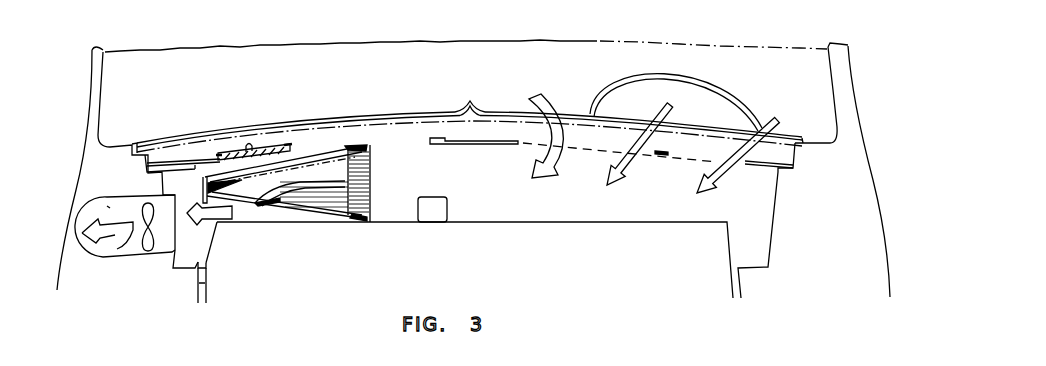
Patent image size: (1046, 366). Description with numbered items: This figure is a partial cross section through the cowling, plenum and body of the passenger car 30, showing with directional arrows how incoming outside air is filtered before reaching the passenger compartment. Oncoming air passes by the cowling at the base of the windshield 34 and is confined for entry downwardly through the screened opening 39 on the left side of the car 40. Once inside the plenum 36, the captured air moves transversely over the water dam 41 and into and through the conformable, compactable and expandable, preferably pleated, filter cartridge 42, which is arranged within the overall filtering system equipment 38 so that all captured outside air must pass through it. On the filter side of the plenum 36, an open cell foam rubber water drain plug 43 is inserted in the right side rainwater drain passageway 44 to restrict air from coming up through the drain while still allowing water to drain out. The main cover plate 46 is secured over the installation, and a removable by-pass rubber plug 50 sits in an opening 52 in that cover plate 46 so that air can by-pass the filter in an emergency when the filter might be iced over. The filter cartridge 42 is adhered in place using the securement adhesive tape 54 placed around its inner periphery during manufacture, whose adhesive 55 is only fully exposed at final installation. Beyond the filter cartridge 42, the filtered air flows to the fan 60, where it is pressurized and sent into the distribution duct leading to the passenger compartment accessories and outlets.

The passenger car 30 is at (852, 70).
The windshield 34 is at (650, 42).
The plenum 36 is at (477, 139).
The filtering system equipment 38 is at (318, 147).
The screened opening 39 is at (593, 150).
The left side of the car 40 is at (857, 100).
The water dam 41 is at (448, 201).
The filter cartridge 42 is at (267, 215).
The water drain plug 43 is at (207, 268).
The rainwater drain passageway 44 is at (208, 296).
The main cover plate 46 is at (203, 160).
The by-pass rubber plug 50 is at (252, 146).
The opening 52 is at (267, 148).
The securement adhesive tape 54 is at (367, 150).
The adhesive 55 is at (353, 222).
The fan 60 is at (170, 250).